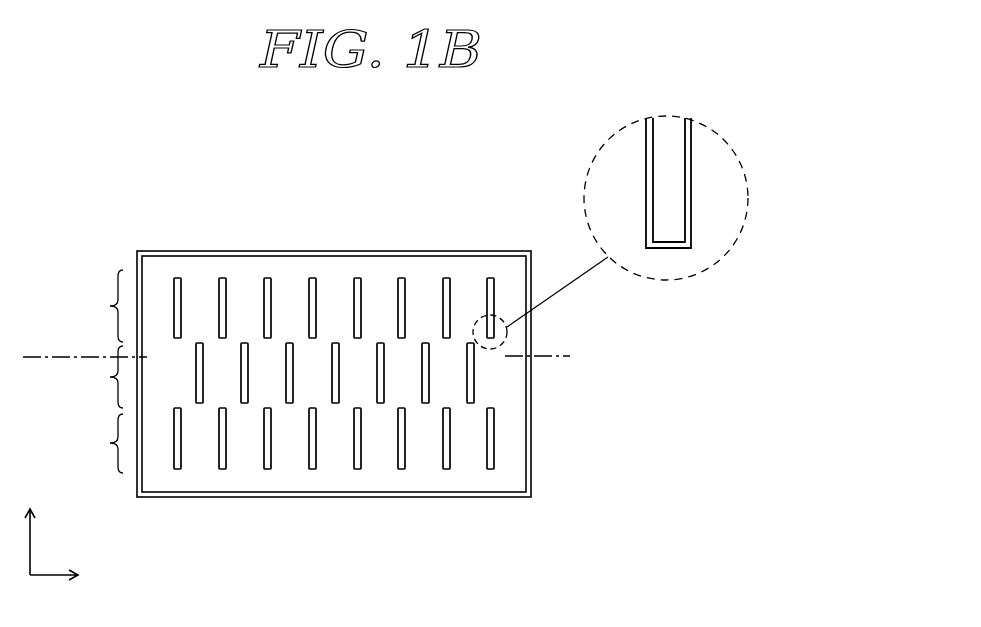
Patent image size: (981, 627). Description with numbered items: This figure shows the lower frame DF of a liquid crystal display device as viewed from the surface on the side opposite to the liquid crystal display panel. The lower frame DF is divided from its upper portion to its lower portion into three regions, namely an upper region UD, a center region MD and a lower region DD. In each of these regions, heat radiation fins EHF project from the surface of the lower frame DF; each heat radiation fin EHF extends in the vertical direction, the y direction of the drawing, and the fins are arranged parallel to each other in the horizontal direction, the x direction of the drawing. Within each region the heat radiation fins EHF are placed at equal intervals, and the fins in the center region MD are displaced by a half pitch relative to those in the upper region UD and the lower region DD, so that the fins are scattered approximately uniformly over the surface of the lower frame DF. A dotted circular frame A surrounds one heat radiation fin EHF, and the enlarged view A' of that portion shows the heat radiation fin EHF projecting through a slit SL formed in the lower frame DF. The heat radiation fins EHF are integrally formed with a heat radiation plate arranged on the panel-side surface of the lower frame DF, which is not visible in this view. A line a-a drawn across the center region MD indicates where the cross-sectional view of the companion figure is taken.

The lower frame DF is at (468, 478).
The heat radiation fin EHF is at (220, 293).
The slit SL is at (647, 207).
The dotted circular frame A is at (540, 303).
The enlarged view A' is at (666, 180).
The upper region UD is at (90, 306).
The center region MD is at (90, 377).
The lower region DD is at (90, 443).
The line a- a is at (46, 368).
The x direction x is at (64, 575).
The y direction y is at (28, 525).